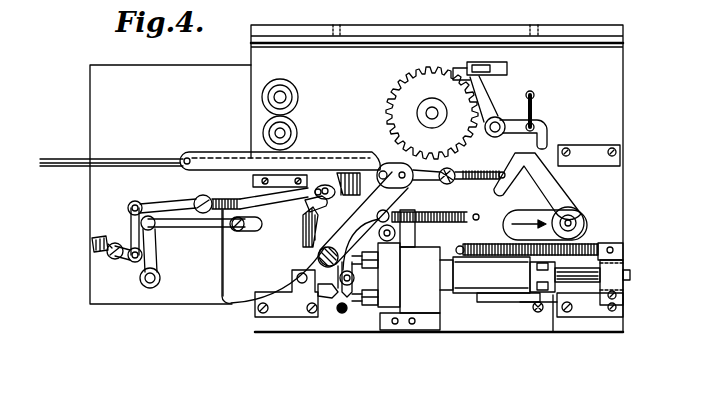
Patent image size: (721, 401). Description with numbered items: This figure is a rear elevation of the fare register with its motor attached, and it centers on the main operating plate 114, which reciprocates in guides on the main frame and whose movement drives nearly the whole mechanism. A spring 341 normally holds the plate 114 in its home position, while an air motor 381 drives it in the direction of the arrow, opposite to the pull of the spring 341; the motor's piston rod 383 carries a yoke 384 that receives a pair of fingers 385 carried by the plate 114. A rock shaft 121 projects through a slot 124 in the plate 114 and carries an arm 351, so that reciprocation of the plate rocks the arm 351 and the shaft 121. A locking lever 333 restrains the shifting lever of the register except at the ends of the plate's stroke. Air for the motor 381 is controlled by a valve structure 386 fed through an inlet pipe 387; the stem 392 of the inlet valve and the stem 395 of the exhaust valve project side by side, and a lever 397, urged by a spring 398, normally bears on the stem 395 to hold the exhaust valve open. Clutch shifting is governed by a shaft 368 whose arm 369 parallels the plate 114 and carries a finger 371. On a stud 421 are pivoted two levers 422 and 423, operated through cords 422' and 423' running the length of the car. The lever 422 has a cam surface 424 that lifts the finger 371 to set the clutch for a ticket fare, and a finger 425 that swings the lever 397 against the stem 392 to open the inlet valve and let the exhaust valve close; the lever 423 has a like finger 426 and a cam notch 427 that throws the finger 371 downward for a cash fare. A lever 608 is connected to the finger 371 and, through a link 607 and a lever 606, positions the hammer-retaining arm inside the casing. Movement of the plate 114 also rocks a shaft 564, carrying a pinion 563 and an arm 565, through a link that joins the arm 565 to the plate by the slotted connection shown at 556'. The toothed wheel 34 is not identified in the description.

The ratchet gear 34 is at (426, 109).
The main operating plate 114 is at (610, 196).
The rock shaft 121 is at (572, 223).
The slot 124 is at (584, 221).
The locking lever 333 is at (380, 282).
The spring 341 is at (598, 241).
The arm 351 is at (552, 187).
The shaft 368 is at (454, 171).
The arm 369 is at (444, 185).
The finger 371 is at (322, 184).
The air motor 381 is at (496, 279).
The piston rod 383 is at (632, 276).
The yoke 384 is at (555, 304).
The fingers 385 is at (542, 275).
The valve structure 386 is at (426, 261).
The inlet pipe 387 is at (438, 330).
The stem of inlet valve 392 is at (364, 310).
The stem of exhaust valve 395 is at (352, 303).
The lever 397 is at (345, 297).
The spring 398 is at (473, 184).
The stud 421 is at (240, 307).
The lever 422 is at (363, 230).
The operating member 422' is at (280, 138).
The lever 423 is at (296, 227).
The operating member 423' is at (164, 135).
The cam surface 424 is at (306, 208).
The finger 425 is at (316, 296).
The finger 426 is at (332, 295).
The cam notch 427 is at (352, 172).
The slotted link 556' is at (246, 246).
The pinion 563 is at (214, 232).
The shaft 564 is at (150, 289).
The arm 565 is at (153, 246).
The lever 606 is at (95, 256).
The link 607 is at (128, 226).
The lever 608 is at (152, 205).